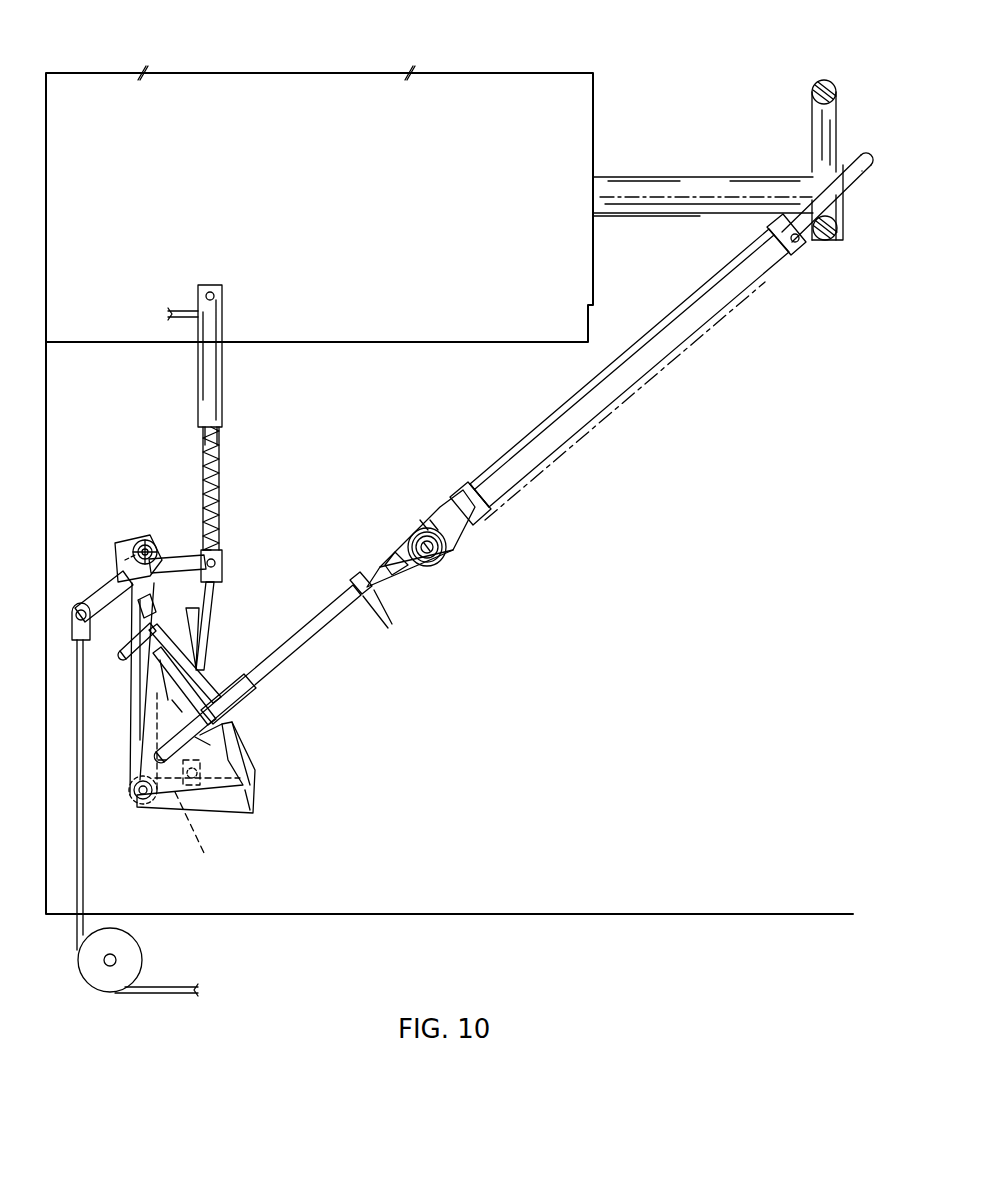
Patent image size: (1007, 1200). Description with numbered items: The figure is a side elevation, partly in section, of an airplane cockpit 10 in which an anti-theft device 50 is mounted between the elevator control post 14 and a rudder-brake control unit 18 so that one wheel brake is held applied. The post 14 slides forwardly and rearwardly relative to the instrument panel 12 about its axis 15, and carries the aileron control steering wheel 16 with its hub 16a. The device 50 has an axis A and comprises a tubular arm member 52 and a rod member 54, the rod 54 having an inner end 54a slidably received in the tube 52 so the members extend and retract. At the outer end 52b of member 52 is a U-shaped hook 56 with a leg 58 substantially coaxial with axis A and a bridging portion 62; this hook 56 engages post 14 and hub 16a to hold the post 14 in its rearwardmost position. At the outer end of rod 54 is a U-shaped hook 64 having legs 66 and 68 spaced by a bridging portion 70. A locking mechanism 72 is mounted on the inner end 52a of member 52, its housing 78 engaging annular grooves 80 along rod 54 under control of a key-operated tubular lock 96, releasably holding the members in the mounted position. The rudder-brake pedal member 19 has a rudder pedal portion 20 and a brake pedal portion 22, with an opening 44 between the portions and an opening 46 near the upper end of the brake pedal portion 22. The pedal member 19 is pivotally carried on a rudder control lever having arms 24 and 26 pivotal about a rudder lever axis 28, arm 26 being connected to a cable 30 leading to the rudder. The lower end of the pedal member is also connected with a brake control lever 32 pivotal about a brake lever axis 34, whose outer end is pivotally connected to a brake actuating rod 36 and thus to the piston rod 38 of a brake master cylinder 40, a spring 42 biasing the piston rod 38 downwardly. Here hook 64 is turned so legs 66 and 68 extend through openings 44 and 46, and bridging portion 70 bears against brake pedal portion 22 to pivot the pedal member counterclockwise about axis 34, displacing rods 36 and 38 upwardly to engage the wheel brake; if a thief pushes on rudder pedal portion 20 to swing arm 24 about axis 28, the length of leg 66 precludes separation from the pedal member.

The airplane cockpit 10 is at (692, 718).
The instrument panel 12 is at (595, 88).
The elevator control post 14 is at (632, 183).
The axis 15 is at (690, 195).
The aileron control steering wheel 16 is at (815, 80).
The hub 16a is at (842, 237).
The rudder-brake control unit 18 is at (127, 457).
The rudder-brake pedal member 19 is at (222, 790).
The rudder pedal portion 20 is at (255, 760).
The brake pedal portion 22 is at (153, 607).
The rudder lever arm 24 is at (128, 590).
The rudder lever arm 26 is at (110, 575).
The rudder lever axis 28 is at (143, 548).
The cable 30 is at (83, 890).
The brake control lever 32 is at (194, 831).
The brake lever axis 34 is at (143, 800).
The brake actuating rod 36 is at (214, 588).
The piston rod 38 is at (222, 475).
The brake master cylinder 40 is at (222, 372).
The spring 42 is at (222, 440).
The opening 44 is at (182, 707).
The opening 46 is at (163, 680).
The anti-theft device 50 is at (590, 545).
The tubular arm member 52 is at (652, 365).
The inner end of tubular member 52a is at (482, 500).
The outer end of tubular member 52b is at (772, 234).
The rod member 54 is at (338, 632).
The inner end of rod member 54a is at (722, 292).
The U-shaped hook 56 is at (855, 150).
The hook leg 58 is at (830, 185).
The bridging portion 62 is at (790, 244).
The U-shaped hook 64 is at (238, 692).
The hook leg 66 is at (163, 752).
The hook leg 68 is at (127, 658).
The bridging portion 70 is at (215, 690).
The locking mechanism 72 is at (418, 500).
The lock housing 78 is at (400, 530).
The annular grooves 80 is at (363, 596).
The key-operated tubular lock 96 is at (436, 557).
The axis A is at (540, 445).